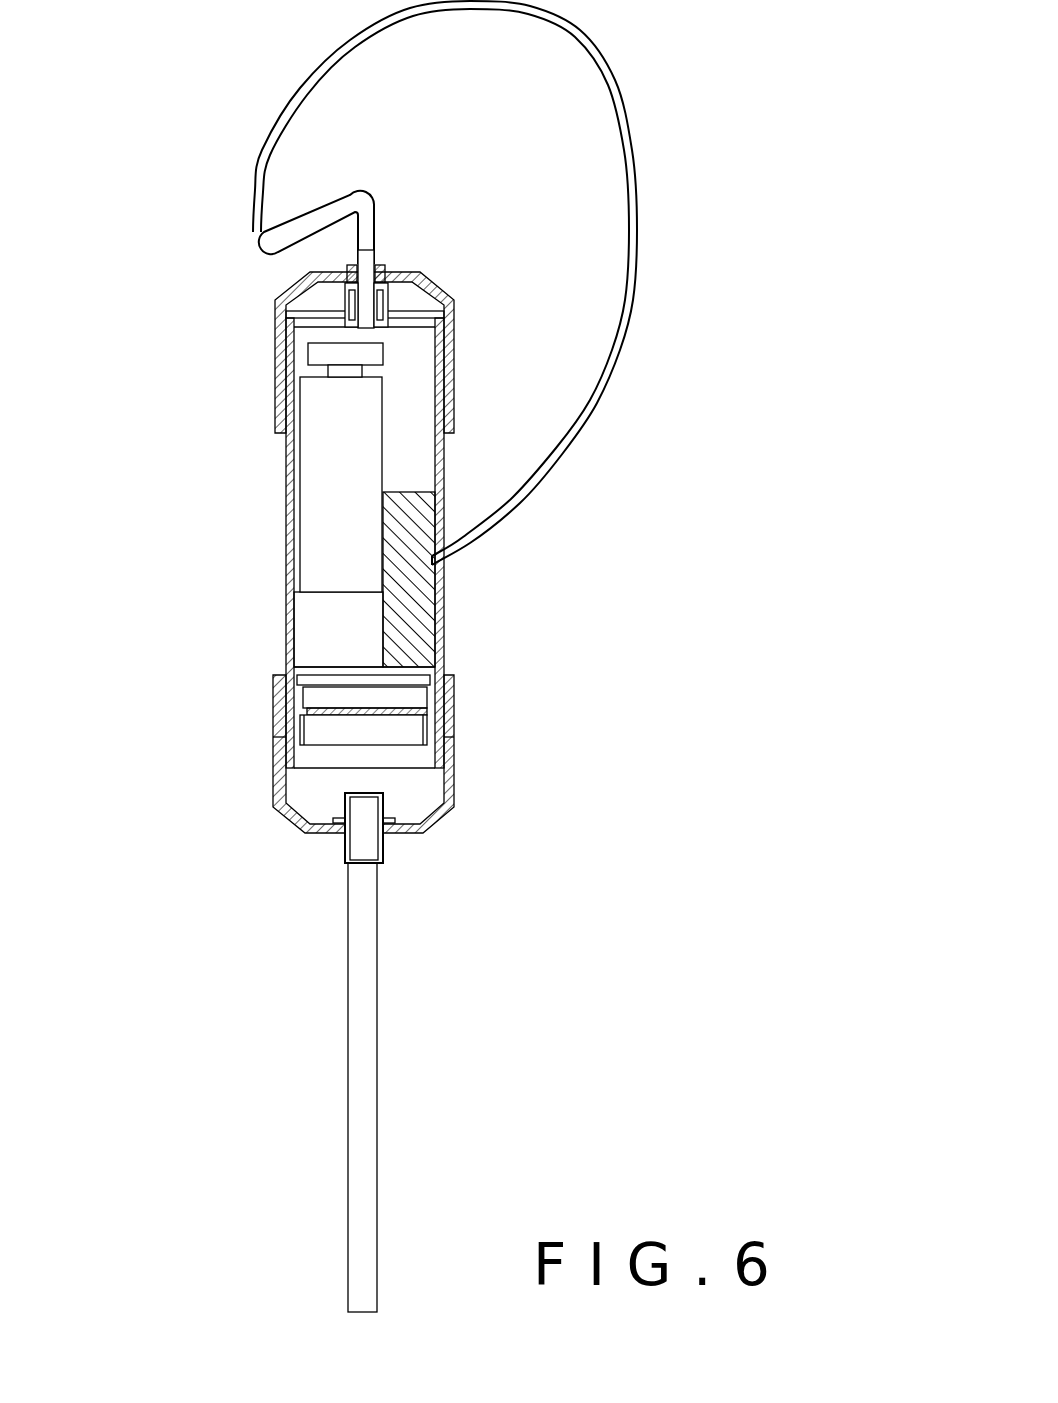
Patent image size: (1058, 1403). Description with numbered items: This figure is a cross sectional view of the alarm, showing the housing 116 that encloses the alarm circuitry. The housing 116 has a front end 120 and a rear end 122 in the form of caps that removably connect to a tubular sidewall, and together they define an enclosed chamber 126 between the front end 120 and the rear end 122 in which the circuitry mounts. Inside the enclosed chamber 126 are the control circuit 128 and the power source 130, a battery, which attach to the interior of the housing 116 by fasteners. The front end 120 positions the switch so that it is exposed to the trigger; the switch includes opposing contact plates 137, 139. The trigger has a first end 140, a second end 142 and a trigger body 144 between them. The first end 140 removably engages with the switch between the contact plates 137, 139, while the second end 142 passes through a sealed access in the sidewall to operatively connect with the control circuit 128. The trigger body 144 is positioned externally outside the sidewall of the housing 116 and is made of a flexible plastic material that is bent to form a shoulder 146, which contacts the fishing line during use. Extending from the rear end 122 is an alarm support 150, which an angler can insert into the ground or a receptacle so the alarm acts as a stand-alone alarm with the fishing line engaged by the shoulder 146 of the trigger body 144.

The housing 116 is at (290, 560).
The front end 120 is at (455, 358).
The rear end 122 is at (277, 722).
The enclosed chamber 126 is at (361, 629).
The control circuit 128 is at (430, 512).
The power source 130 is at (327, 457).
The contact plate 137 is at (340, 332).
The contact plate 139 is at (380, 293).
The first end 140 is at (375, 302).
The second end 142 is at (467, 553).
The trigger body 144 is at (567, 20).
The shoulder 146 is at (357, 188).
The alarm support 150 is at (370, 905).